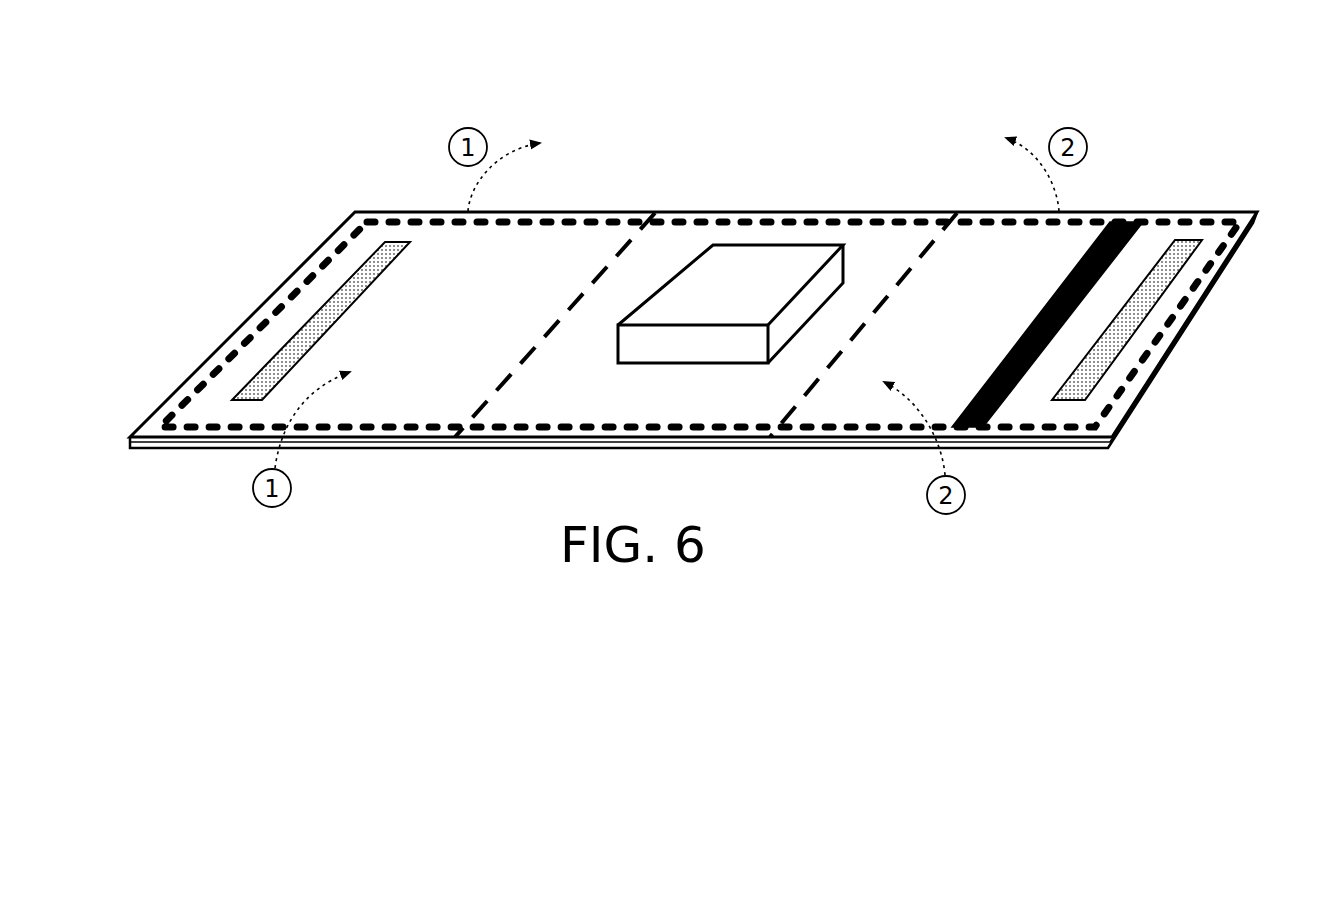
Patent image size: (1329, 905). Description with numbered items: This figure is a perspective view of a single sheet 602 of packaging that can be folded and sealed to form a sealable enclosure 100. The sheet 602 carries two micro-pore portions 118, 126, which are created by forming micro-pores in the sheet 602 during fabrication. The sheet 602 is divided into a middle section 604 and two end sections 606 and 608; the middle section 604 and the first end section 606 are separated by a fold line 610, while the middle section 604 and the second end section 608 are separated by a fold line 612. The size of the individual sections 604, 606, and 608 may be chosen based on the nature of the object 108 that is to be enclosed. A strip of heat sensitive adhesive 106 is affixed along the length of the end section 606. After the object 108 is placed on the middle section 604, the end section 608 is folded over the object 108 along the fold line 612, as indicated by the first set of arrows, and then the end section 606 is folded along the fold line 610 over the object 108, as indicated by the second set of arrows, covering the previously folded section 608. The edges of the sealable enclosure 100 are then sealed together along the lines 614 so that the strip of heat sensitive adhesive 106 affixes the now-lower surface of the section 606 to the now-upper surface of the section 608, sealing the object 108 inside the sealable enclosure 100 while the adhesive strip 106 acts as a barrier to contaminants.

The sealable enclosure 100 is at (650, 74).
The strip of heat sensitive adhesive 106 is at (1062, 283).
The object 108 is at (741, 309).
The micro-pore portion 118 is at (398, 245).
The micro-pore portion 126 is at (1163, 295).
The sheet 602 is at (1214, 178).
The middle section 604 is at (774, 406).
The first end section 606 is at (958, 373).
The second end section 608 is at (435, 334).
The fold line 610 is at (878, 302).
The fold line 612 is at (537, 348).
The lines 614 is at (287, 297).